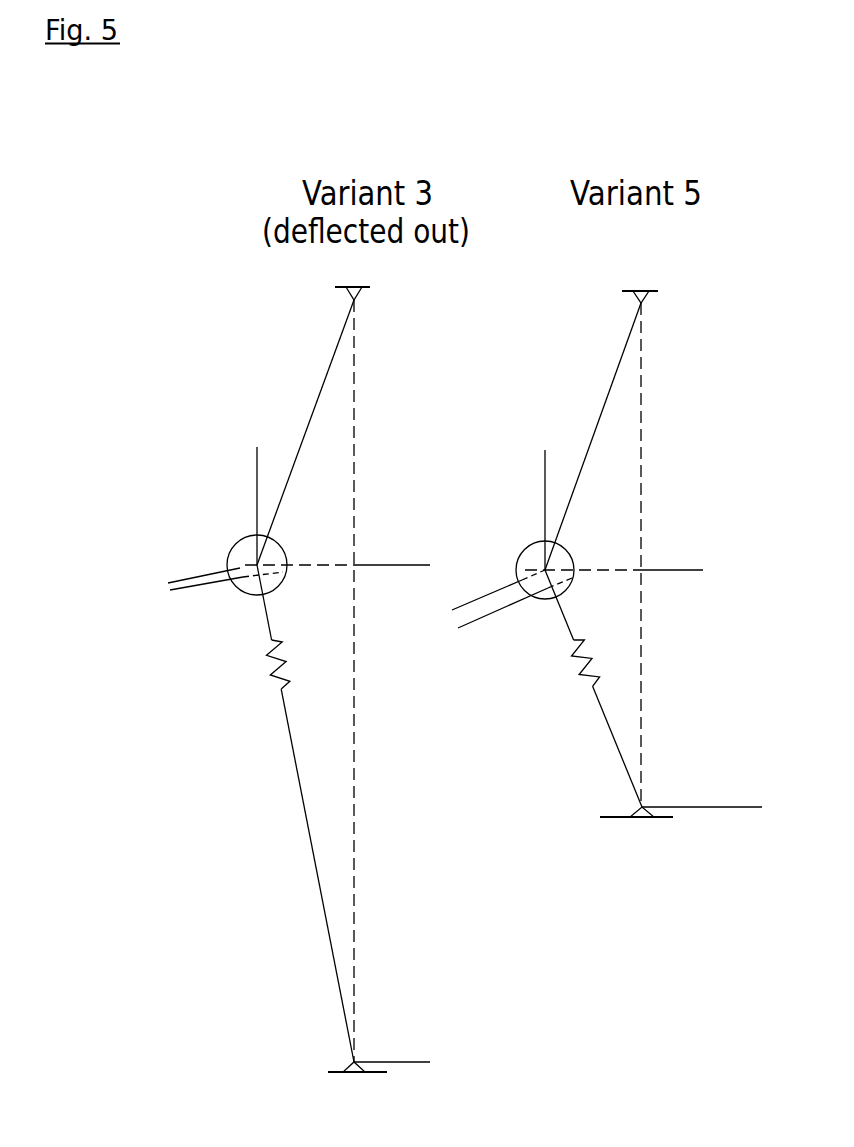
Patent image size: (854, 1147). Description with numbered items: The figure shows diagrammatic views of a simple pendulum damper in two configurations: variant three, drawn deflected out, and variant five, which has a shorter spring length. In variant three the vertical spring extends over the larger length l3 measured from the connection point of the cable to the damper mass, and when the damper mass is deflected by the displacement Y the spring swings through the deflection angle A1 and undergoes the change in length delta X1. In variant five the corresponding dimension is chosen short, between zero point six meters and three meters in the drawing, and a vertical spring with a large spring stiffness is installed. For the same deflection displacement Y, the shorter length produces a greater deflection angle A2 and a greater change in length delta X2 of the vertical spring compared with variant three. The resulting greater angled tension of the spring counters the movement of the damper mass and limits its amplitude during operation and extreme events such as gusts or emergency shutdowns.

The deflection displacement Y is at (354, 462).
The deflection angle A1 is at (402, 801).
The deflection angle A2 is at (687, 632).
The change in length delta X1 is at (215, 750).
The change in length delta X2 is at (547, 797).
The length from connection point of cable to damper mass l3 is at (415, 565).